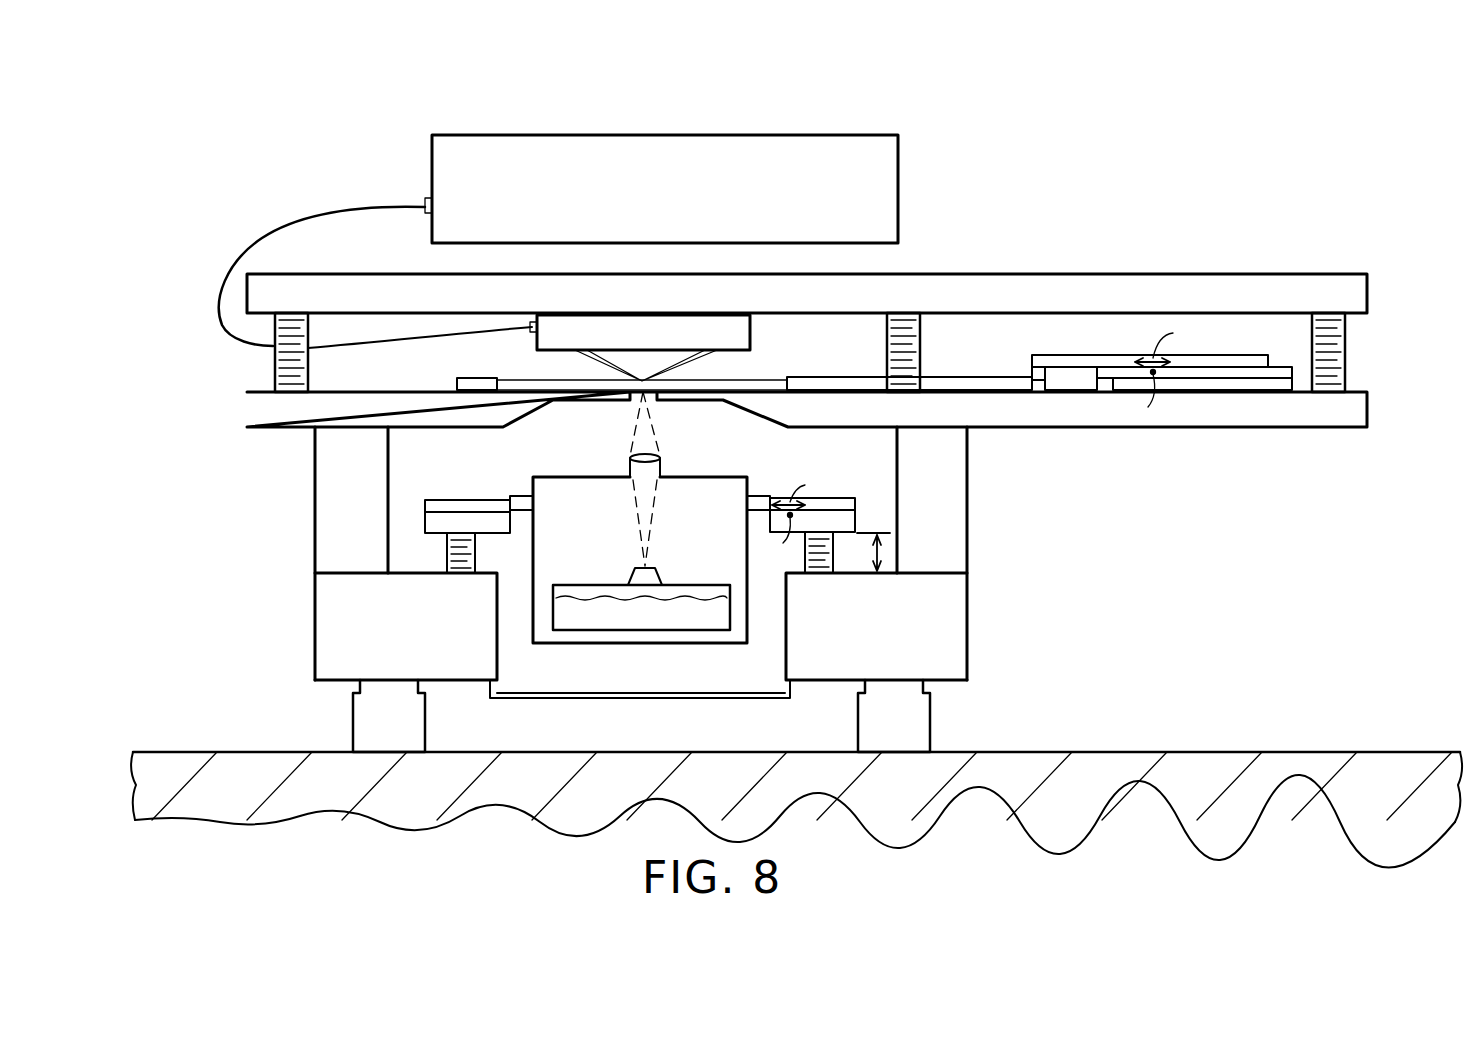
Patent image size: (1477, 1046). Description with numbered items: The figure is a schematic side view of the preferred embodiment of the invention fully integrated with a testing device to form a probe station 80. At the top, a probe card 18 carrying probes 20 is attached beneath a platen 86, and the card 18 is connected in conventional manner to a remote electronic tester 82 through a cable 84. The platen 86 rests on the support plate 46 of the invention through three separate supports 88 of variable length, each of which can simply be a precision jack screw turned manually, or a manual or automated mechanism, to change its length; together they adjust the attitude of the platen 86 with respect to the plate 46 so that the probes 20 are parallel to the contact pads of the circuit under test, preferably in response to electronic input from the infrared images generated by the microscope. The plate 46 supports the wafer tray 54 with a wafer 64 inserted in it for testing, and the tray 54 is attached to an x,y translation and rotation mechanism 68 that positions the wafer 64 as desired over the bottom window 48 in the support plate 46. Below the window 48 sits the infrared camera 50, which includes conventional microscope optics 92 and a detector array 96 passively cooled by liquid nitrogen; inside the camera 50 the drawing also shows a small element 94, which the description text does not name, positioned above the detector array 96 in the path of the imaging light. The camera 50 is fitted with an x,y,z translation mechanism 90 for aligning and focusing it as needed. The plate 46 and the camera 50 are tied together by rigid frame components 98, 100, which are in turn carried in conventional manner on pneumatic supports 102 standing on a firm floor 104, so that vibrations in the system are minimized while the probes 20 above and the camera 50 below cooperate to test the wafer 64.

The probe card 18 is at (615, 328).
The probes 20 is at (683, 360).
The support plate 46 is at (260, 407).
The bottom window 48 is at (648, 397).
The infrared camera 50 is at (735, 488).
The wafer tray 54 is at (477, 377).
The wafer 64 is at (558, 375).
The x,y translation and rotation mechanism 68 is at (1115, 355).
The probe station 80 is at (1137, 145).
The remote electronic tester 82 is at (810, 155).
The cable 84 is at (298, 220).
The platen 86 is at (1095, 297).
The supports of variable length 88 is at (275, 365).
The x,y,z translation mechanism 90 is at (842, 497).
The microscope optics 92 is at (630, 458).
The sample 94 is at (628, 582).
The detector array 96 is at (677, 613).
The rigid frame components 98 is at (947, 617).
The rigid frame components 100 is at (948, 505).
The pneumatic supports 102 is at (915, 722).
The firm floor 104 is at (1200, 770).